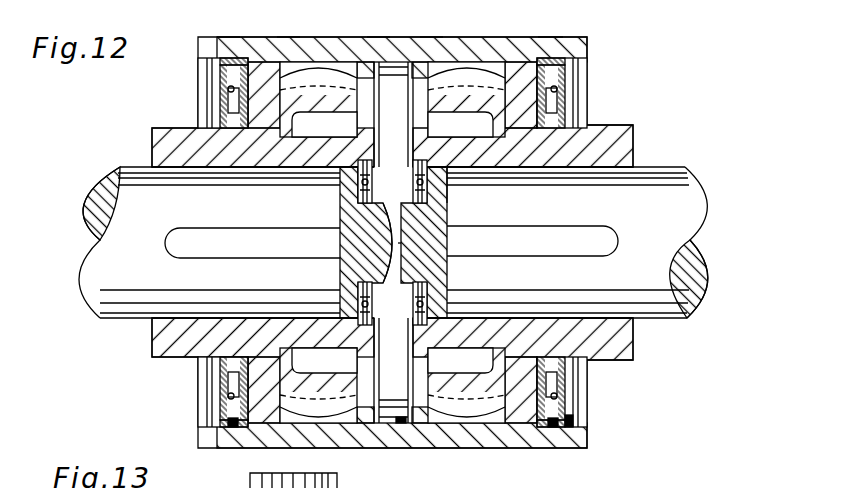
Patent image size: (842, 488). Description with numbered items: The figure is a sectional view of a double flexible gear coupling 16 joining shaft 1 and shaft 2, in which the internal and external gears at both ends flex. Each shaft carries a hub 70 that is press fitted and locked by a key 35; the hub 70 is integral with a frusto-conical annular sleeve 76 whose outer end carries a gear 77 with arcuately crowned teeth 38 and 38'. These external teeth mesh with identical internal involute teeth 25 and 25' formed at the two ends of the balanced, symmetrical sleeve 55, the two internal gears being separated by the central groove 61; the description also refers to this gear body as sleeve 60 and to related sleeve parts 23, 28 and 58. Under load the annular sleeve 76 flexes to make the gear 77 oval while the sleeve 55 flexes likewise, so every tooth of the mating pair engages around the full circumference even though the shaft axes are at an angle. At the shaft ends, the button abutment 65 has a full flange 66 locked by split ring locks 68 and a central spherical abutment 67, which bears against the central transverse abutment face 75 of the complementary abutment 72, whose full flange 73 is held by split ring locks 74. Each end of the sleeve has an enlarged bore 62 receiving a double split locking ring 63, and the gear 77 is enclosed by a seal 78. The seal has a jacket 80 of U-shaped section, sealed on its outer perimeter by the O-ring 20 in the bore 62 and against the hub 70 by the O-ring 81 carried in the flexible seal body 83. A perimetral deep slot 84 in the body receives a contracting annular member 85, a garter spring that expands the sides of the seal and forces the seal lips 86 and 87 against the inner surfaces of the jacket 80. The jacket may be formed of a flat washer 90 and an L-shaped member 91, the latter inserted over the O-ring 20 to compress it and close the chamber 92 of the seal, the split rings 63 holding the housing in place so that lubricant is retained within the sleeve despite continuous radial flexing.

The shaft 1 is at (690, 202).
The shaft 2 is at (123, 177).
The coupling assembly 16 is at (563, 3).
The O-ring sealing element 20 is at (233, 57).
The housing part 23 is at (381, 18).
The internal involute gear teeth 25 is at (326, 211).
The internal gear teeth 25' is at (462, 211).
The housing part 28 is at (232, 18).
The key 35 is at (185, 207).
The teeth 38 is at (318, 214).
The teeth 38' is at (470, 214).
The sleeve 55 is at (385, 70).
The housing part 58 is at (434, 18).
The sleeve 60 is at (291, 18).
The central groove 61 is at (405, 424).
The enlarged bore 62 is at (285, 70).
The double split locking ring 63 is at (203, 64).
The button abutment 65 is at (357, 258).
The full flange 66 is at (340, 176).
The spherical abutment 67 is at (395, 237).
The flange split ring lock 68 is at (363, 170).
The hub 70 is at (160, 143).
The complementary abutment 72 is at (433, 218).
The full flange 73 is at (443, 187).
The split ring lock 74 is at (450, 168).
The central transverse abutment face 75 is at (408, 258).
The annular sleeve 76 is at (285, 117).
The gear 77 is at (340, 107).
The seal 78 is at (230, 52).
The jacket 80 is at (218, 72).
The O-ring 81 is at (230, 117).
The flexible seal body 83 is at (222, 98).
The perimetral deep slot 84 is at (562, 383).
The contracting annular member 85 is at (237, 403).
The seal lip 86 is at (230, 380).
The seal lip 87 is at (230, 400).
The flat washer 90 is at (557, 410).
The L-shaped member 91 is at (565, 443).
The chamber 92 is at (277, 438).